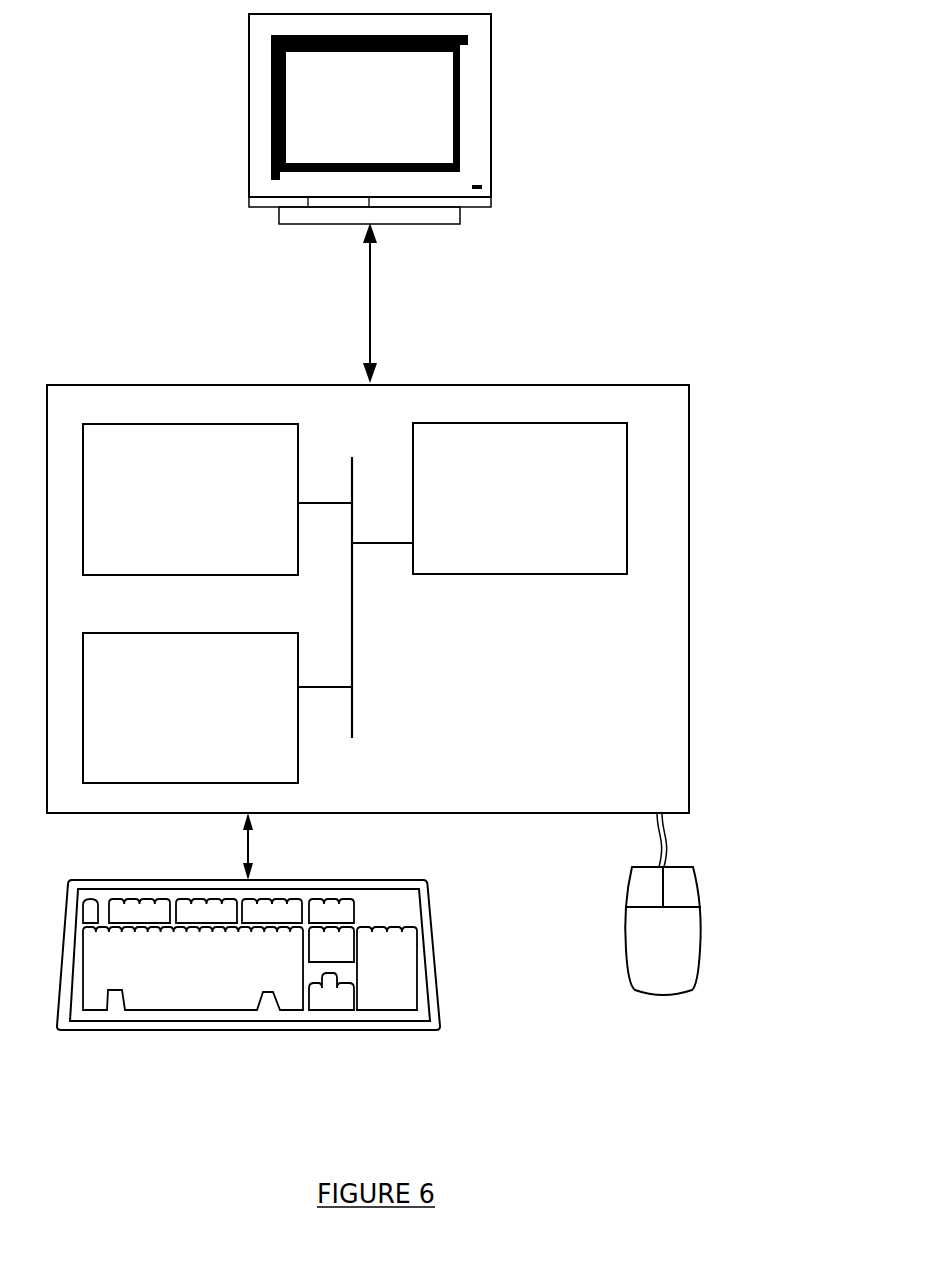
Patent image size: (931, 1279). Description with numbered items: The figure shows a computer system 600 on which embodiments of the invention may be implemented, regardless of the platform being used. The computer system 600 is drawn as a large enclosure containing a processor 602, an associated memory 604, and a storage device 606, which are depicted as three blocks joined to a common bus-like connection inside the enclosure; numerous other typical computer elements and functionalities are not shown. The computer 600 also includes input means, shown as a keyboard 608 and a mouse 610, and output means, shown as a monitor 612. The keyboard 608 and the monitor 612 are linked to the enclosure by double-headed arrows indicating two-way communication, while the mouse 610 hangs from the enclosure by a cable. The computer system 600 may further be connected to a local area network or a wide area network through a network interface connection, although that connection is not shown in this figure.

The computer system 600 is at (438, 599).
The processor 602 is at (494, 514).
The memory 604 is at (166, 511).
The storage device 606 is at (163, 720).
The keyboard 608 is at (160, 991).
The mouse 610 is at (642, 947).
The monitor 612 is at (370, 119).